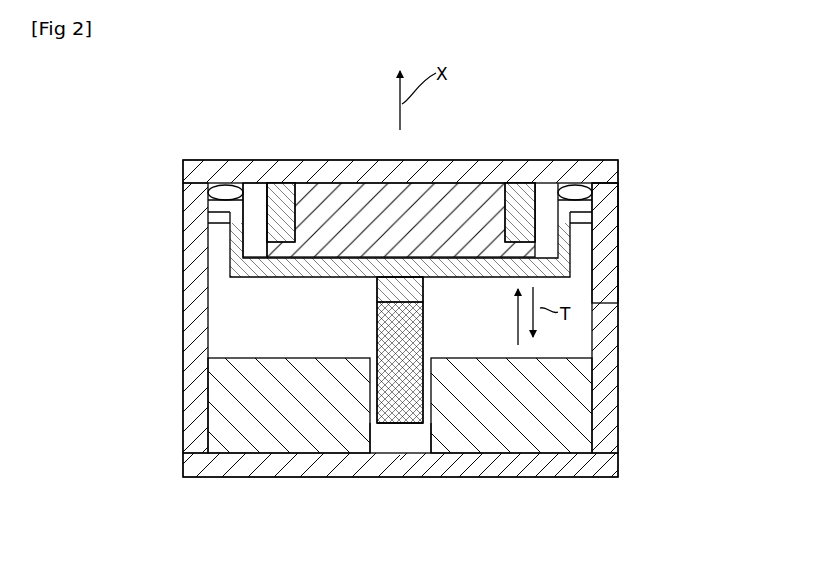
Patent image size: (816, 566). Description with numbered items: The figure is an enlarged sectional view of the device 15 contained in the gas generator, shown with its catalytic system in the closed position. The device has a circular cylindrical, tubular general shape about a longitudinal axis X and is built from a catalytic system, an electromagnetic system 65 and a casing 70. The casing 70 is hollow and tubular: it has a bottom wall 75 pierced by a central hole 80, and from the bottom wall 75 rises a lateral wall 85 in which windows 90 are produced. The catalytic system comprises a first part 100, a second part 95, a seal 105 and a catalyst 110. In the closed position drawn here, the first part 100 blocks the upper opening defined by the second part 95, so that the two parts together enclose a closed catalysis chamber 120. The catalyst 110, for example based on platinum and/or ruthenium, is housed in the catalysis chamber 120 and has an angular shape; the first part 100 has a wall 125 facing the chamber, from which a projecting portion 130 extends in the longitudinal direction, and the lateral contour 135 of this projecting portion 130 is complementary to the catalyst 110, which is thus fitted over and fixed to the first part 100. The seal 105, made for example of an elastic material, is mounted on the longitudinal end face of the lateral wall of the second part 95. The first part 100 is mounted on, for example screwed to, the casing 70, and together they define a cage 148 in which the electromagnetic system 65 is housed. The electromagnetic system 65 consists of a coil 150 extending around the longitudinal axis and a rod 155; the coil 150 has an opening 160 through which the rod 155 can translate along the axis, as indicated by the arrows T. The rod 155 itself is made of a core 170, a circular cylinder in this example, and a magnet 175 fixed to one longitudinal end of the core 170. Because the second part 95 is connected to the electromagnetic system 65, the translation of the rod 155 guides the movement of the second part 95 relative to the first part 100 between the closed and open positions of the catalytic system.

The valve assembly 15 is at (577, 136).
The electromagnetic system 65 is at (585, 372).
The casing 70 is at (607, 420).
The bottom wall 75 is at (577, 468).
The central hole 80 is at (415, 465).
The lateral wall 85 is at (198, 322).
The windows 90 is at (596, 215).
The second part 95 is at (277, 270).
The first part 100 is at (182, 165).
The seal 105 is at (214, 187).
The catalyst 110 is at (520, 190).
The catalysis chamber 120 is at (559, 200).
The wall 125 is at (258, 190).
The projecting portion 130 is at (357, 160).
The lateral contour 135 is at (288, 195).
The cage 148 is at (580, 333).
The coil 150 is at (287, 432).
The rod 155 is at (377, 327).
The opening 160 is at (385, 432).
The core 170 is at (425, 332).
The magnet 175 is at (425, 292).